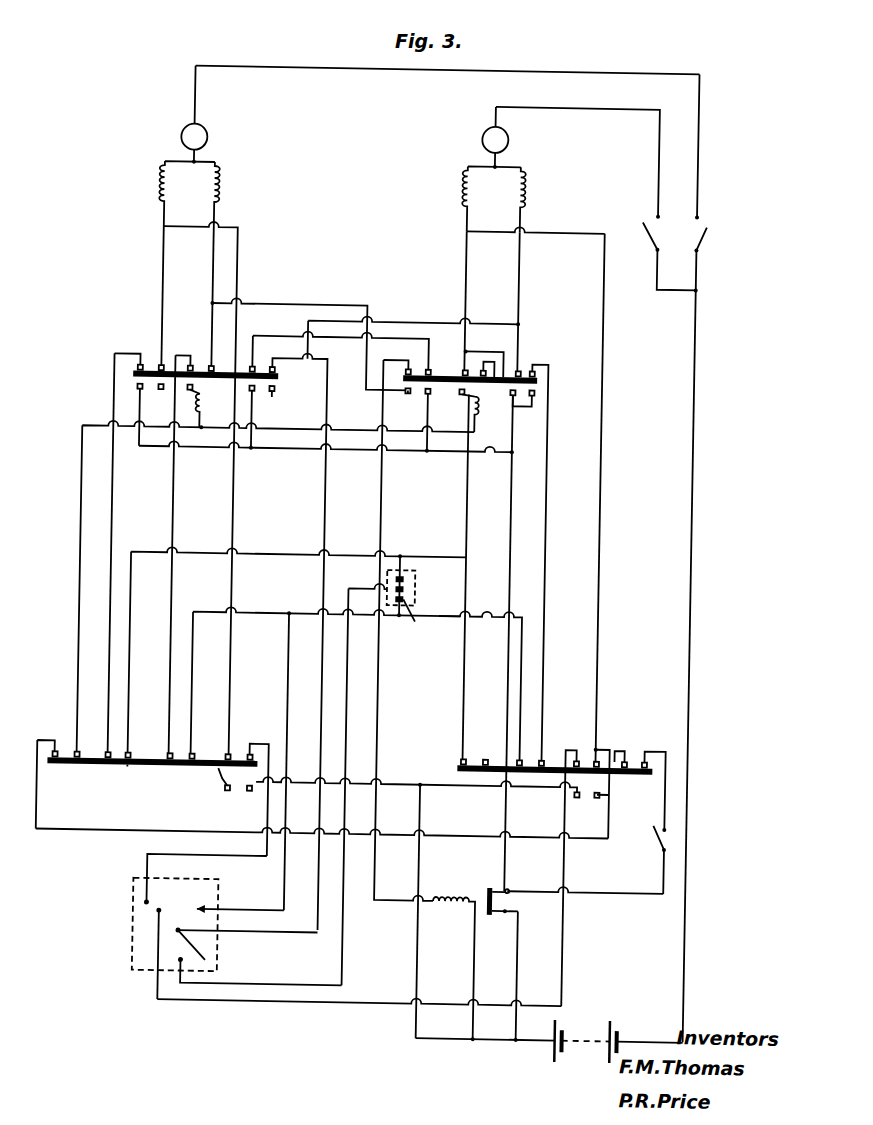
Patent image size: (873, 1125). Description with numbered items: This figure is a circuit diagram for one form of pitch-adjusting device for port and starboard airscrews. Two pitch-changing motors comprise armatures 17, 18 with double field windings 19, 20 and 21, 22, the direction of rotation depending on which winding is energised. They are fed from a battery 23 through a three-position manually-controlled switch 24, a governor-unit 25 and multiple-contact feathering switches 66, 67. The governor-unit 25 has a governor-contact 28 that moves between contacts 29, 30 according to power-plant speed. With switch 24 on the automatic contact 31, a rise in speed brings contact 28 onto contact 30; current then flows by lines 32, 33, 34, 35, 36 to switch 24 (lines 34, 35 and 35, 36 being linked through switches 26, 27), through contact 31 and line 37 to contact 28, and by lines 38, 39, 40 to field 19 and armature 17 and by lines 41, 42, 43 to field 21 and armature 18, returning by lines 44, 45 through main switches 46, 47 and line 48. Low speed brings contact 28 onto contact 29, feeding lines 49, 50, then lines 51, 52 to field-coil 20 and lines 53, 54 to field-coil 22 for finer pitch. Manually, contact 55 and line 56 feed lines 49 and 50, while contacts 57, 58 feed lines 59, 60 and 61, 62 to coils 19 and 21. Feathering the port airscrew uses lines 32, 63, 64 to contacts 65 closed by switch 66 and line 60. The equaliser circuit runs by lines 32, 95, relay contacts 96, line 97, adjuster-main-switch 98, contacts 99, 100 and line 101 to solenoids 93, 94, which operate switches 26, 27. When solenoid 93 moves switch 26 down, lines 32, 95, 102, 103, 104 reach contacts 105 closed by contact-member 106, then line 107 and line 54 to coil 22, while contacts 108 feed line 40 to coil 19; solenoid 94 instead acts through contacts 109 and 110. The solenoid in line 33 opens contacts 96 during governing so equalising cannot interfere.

The armature 17 is at (200, 124).
The armature 18 is at (501, 136).
The field winding 19 is at (153, 193).
The field winding 20 is at (214, 192).
The field winding 21 is at (456, 202).
The field winding 22 is at (519, 186).
The battery 23 is at (598, 1042).
The three-position manually-controlled switch 24 is at (215, 940).
The governor-unit 25 is at (404, 600).
The switch 26 is at (209, 370).
The switch 27 is at (460, 370).
The governor-contact 28 is at (404, 590).
The contact 29 is at (419, 624).
The contact 30 is at (404, 580).
The automatic contact 31 is at (178, 944).
The line 32 is at (540, 1042).
The line 33 is at (481, 953).
The line 34 is at (392, 903).
The line 35 is at (252, 339).
The line 36 is at (324, 412).
The line 37 is at (276, 978).
The line 38 is at (268, 557).
The line 39 is at (111, 678).
The line 40 is at (158, 263).
The line 41 is at (440, 532).
The line 42 is at (466, 545).
The line 43 is at (461, 266).
The line 44 is at (270, 70).
The line 45 is at (553, 106).
The main switch 46 is at (687, 164).
The main switch 47 is at (656, 253).
The line 48 is at (691, 347).
The line 49 is at (270, 616).
The line 50 is at (452, 616).
The line 51 is at (172, 644).
The line 52 is at (208, 263).
The line 53 is at (545, 668).
The line 54 is at (514, 268).
The contact 55 is at (200, 912).
The line 56 is at (290, 899).
The contact 57 is at (150, 907).
The contact 58 is at (162, 916).
The line 59 is at (228, 860).
The line 60 is at (232, 263).
The line 61 is at (229, 1005).
The line 62 is at (599, 555).
The line 63 is at (424, 868).
The line 64 is at (421, 785).
The pair of contacts 65 is at (243, 796).
The multiple-contact feathering switch 66 is at (153, 772).
The multiple-contact feathering switch 67 is at (555, 765).
The solenoid 93 is at (201, 412).
The solenoid 94 is at (453, 423).
The line 95 is at (524, 950).
The relay-controlled contacts 96 is at (515, 905).
The line 97 is at (616, 890).
The adjuster-main-switch 98 is at (643, 822).
The contacts 99 is at (554, 793).
The contacts 100 is at (68, 772).
The line 101 is at (80, 673).
The line 102 is at (520, 867).
The line 103 is at (409, 452).
The line 104 is at (253, 416).
The pair of contacts 105 is at (269, 396).
The contact-member 106 is at (270, 368).
The line 107 is at (390, 323).
The contacts 108 is at (137, 396).
The contacts 109 is at (406, 396).
The contacts 110 is at (530, 400).